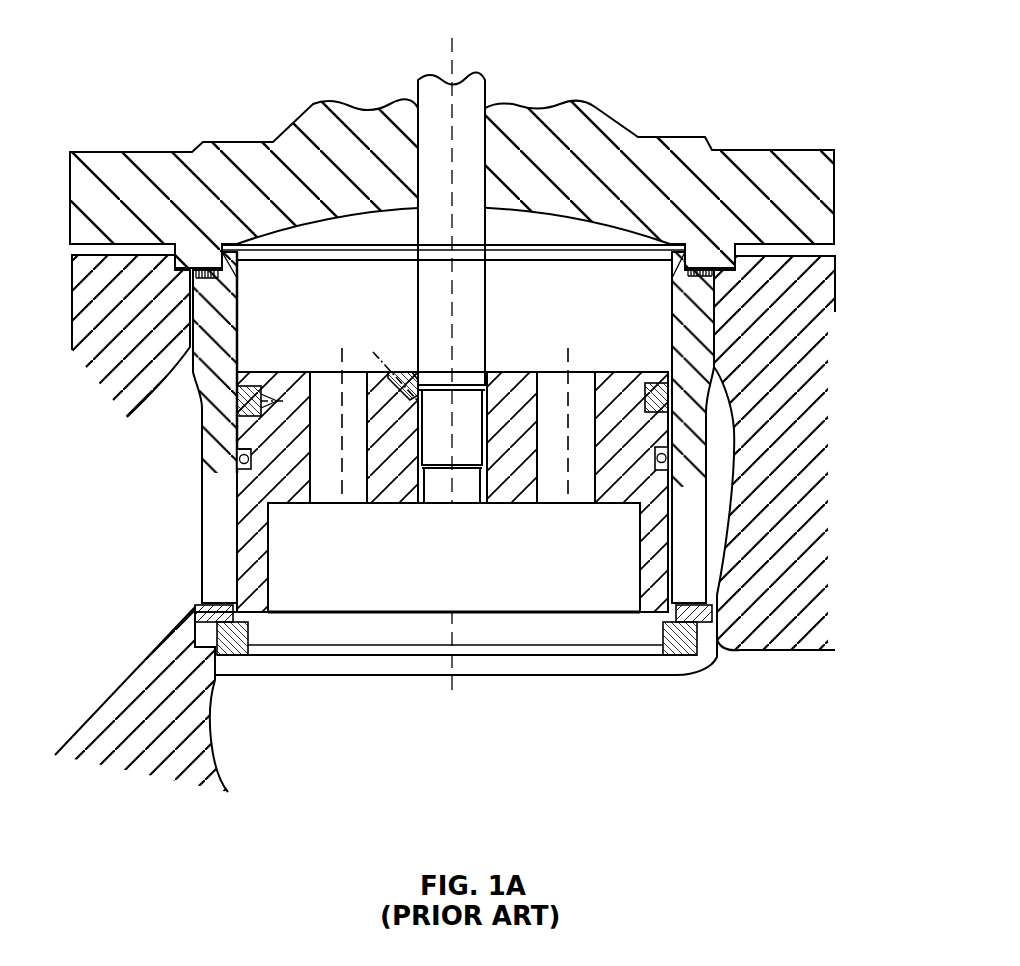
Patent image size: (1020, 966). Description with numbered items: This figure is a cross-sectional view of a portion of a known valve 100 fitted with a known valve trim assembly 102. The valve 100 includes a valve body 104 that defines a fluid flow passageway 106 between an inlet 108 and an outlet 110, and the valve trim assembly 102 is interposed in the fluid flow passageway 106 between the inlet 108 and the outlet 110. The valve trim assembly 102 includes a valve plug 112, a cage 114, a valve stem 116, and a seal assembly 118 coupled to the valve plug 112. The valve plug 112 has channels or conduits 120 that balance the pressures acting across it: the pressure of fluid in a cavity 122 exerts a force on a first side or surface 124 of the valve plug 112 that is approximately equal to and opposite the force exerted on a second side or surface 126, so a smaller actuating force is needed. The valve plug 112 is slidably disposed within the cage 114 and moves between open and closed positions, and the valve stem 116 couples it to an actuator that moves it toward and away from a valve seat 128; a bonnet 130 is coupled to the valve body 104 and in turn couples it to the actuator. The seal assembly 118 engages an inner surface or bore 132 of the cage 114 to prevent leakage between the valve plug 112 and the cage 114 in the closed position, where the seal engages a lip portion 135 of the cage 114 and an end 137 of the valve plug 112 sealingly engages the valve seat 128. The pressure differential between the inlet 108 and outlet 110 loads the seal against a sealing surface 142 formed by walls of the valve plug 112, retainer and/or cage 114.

The valve 100 is at (675, 68).
The valve trim assembly 102 is at (294, 272).
The valve body 104 is at (190, 780).
The fluid flow passageway 106 is at (471, 756).
The inlet 108 is at (143, 643).
The outlet 110 is at (830, 650).
The valve plug 112 is at (272, 600).
The cage 114 is at (202, 450).
The valve stem 116 is at (418, 87).
The seal assembly 118 is at (650, 366).
The channels or conduits 120 is at (358, 372).
The cavity 122 is at (406, 304).
The first side or surface 124 is at (496, 370).
The second side or surface 126 is at (412, 504).
The valve seat 128 is at (258, 620).
The bonnet 130 is at (690, 136).
The inner surface or bore 132 is at (237, 300).
The lip portion 135 is at (244, 470).
The end 137 is at (667, 612).
The sealing surface 142 is at (245, 483).